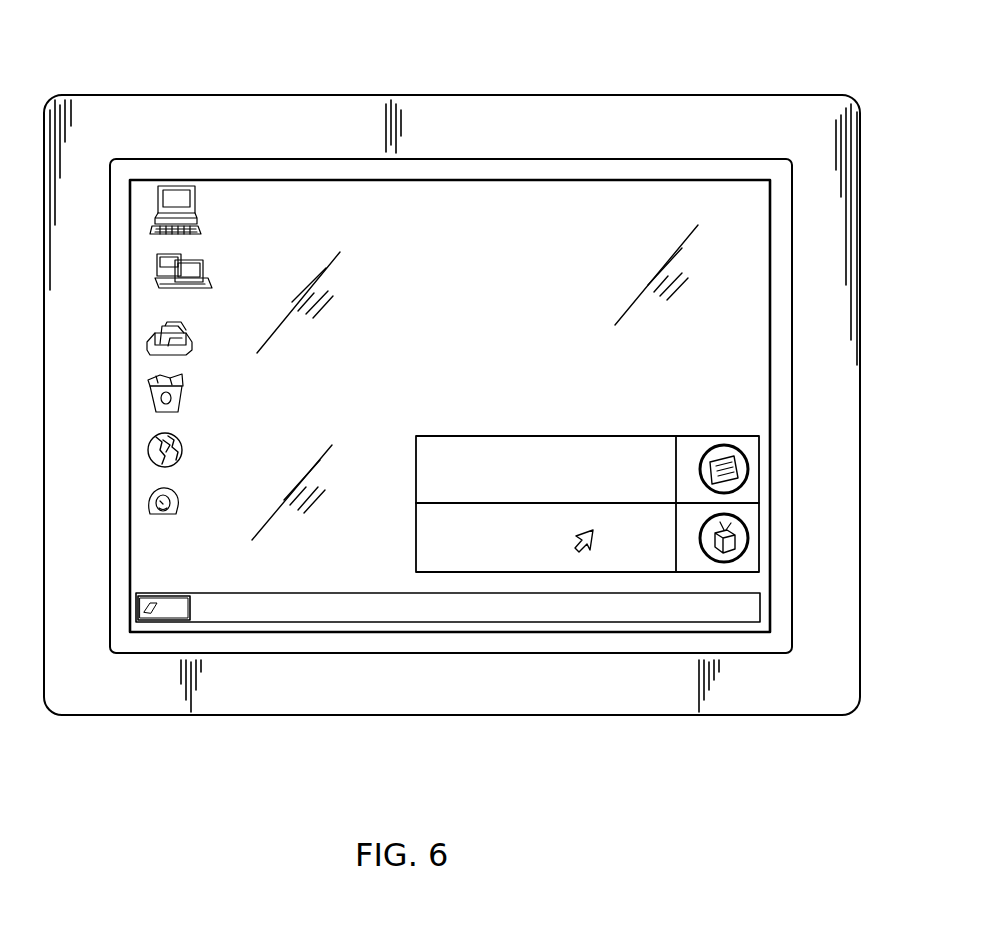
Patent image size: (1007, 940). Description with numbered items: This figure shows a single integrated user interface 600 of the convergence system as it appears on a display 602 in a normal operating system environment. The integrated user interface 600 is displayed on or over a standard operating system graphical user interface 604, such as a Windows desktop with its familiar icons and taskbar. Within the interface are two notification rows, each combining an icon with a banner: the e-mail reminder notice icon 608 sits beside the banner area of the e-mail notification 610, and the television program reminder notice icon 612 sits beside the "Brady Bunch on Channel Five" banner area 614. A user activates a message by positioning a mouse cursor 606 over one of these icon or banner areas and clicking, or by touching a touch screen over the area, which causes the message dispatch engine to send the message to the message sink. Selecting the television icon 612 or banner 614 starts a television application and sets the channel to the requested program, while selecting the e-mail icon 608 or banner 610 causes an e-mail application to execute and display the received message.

The single integrated user interface 600 is at (675, 458).
The display 602 is at (705, 110).
The operating system graphical user interface 604 is at (463, 207).
The cursor 606 is at (592, 542).
The e-mail reminder notice icon 608 is at (757, 455).
The e-mail notification banner area 610 is at (440, 446).
The television program reminder notice icon 612 is at (752, 565).
The television program banner area 614 is at (430, 548).